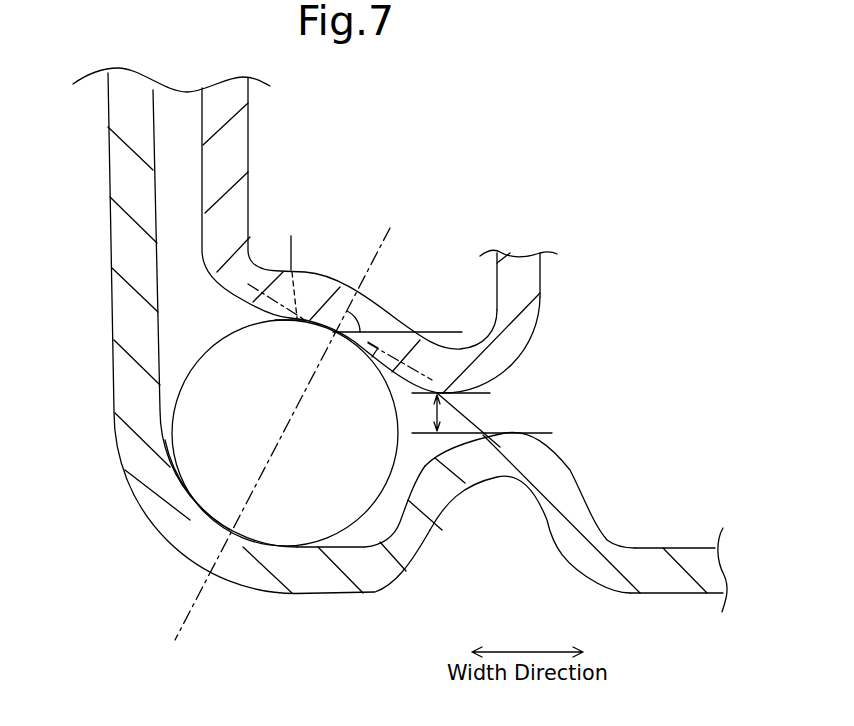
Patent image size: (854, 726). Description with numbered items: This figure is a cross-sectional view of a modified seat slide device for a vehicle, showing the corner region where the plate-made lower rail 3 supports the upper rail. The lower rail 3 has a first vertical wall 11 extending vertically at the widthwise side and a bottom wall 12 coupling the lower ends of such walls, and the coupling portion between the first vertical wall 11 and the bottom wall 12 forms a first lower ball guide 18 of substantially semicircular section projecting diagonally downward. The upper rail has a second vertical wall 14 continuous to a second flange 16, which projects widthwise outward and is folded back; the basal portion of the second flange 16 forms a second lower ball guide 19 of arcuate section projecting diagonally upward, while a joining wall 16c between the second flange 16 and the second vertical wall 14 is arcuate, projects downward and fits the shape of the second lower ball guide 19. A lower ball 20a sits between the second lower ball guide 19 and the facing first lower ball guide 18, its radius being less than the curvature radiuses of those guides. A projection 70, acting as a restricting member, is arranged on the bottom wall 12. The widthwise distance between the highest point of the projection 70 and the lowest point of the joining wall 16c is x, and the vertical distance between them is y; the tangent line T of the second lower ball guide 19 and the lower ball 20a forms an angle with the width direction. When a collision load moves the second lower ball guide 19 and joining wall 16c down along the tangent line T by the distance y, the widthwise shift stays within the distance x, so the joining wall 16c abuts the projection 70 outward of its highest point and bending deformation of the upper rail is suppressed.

The first vertical wall 11 is at (110, 240).
The second flange 16 is at (250, 133).
The second vertical wall 14 is at (541, 276).
The joining wall 16c is at (487, 388).
The second lower ball guide 19 is at (291, 322).
The lower ball 20a is at (205, 352).
The first lower ball guide 18 is at (202, 486).
The lower rail 3 is at (315, 594).
The bottom wall 12 is at (672, 595).
The projection 70 is at (574, 468).
The tangent line T is at (291, 266).
The widthwise distance x is at (483, 418).
The vertical distance y is at (417, 433).